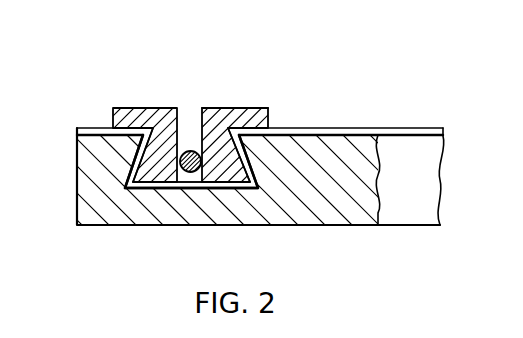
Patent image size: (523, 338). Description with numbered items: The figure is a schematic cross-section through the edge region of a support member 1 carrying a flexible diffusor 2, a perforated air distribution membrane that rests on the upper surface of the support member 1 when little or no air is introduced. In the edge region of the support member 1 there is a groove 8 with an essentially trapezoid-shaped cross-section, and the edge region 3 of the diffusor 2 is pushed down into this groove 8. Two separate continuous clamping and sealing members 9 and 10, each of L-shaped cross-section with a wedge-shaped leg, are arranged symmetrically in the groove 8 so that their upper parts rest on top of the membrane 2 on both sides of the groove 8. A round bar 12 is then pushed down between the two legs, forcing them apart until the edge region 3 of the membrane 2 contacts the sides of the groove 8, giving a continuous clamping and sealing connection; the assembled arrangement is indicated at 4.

The support member 1 is at (353, 217).
The flexible diffusor 2 is at (340, 127).
The edge region 3 is at (135, 164).
The electrode structure 4 is at (228, 97).
The groove 8 is at (218, 183).
The continuous clamping and sealing member 9 is at (152, 108).
The continuous clamping and sealing member 10 is at (248, 112).
The round bar 12 is at (190, 151).